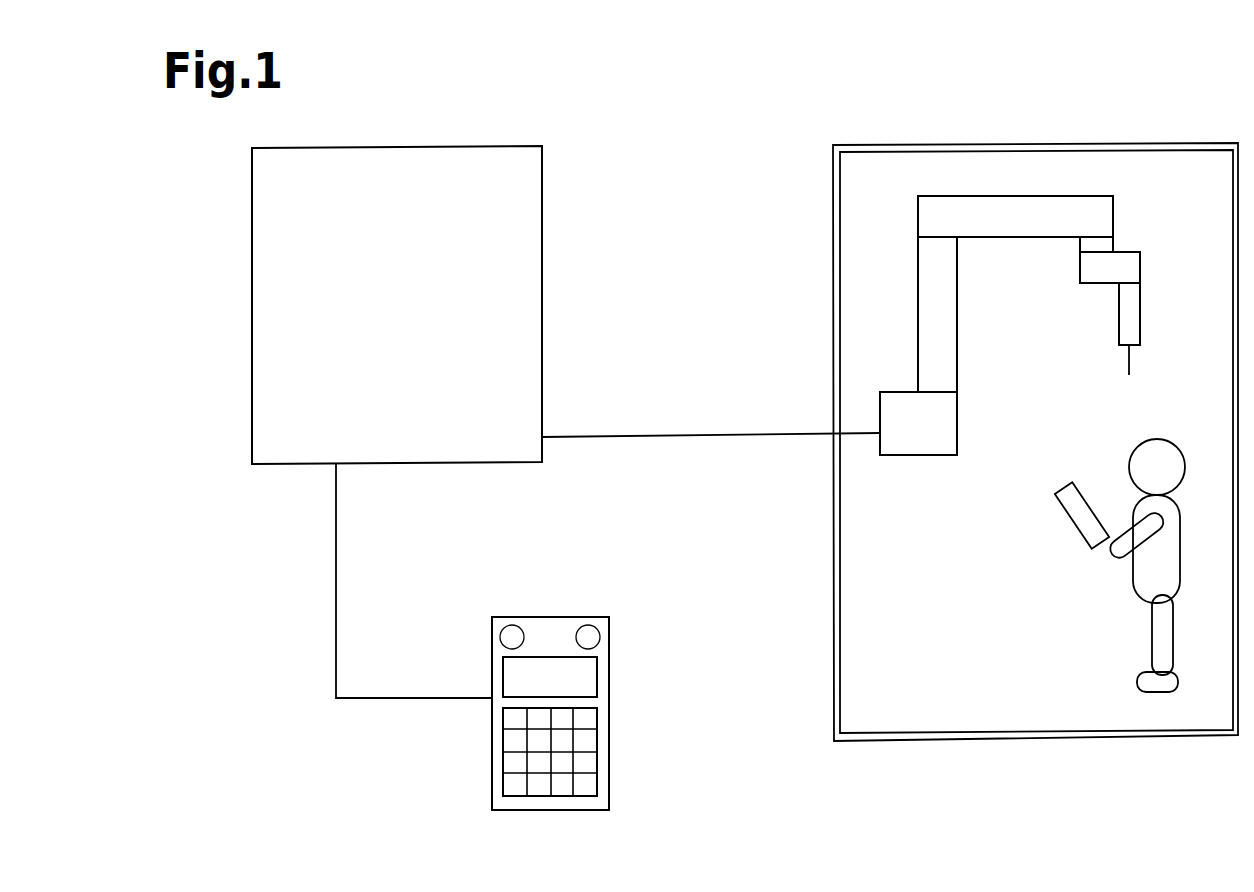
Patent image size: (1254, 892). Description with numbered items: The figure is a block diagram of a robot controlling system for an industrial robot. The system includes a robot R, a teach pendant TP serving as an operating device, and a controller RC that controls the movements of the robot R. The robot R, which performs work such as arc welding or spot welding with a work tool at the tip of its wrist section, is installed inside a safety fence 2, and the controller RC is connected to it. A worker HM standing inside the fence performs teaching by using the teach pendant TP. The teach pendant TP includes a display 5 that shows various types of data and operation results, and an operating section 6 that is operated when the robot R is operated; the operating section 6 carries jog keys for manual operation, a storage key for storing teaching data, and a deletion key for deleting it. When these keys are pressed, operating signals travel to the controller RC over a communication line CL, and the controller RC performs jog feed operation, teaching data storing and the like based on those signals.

The controller RC is at (426, 147).
The communication line CL is at (386, 699).
The teach pendant TP is at (562, 811).
The display 5 is at (592, 678).
The operating section 6 is at (590, 763).
The safety fence 2 is at (1037, 741).
The robot R is at (1105, 211).
The worker HM is at (1135, 578).